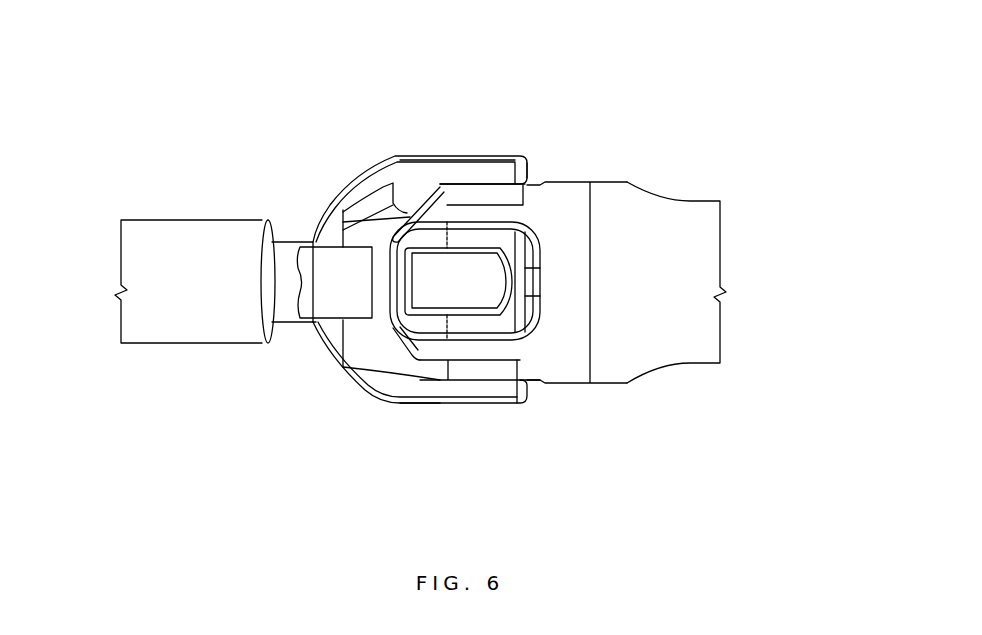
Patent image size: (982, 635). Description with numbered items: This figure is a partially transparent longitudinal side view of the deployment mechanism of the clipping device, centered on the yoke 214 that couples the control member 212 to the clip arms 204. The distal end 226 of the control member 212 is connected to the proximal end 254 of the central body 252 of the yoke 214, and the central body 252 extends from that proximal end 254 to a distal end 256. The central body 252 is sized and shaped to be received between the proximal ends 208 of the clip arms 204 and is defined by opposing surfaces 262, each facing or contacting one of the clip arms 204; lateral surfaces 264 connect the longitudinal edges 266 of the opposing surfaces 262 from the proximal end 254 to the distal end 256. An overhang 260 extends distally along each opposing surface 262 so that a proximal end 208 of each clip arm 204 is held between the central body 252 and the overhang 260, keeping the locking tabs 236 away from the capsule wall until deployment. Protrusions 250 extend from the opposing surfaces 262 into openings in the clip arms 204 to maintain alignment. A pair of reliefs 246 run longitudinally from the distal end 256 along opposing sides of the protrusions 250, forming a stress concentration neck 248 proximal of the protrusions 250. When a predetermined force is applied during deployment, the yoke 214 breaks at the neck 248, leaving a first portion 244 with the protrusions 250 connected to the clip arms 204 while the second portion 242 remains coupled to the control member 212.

The clip arms 204 is at (705, 262).
The proximal ends 208 is at (555, 212).
The control member 212 is at (150, 245).
The yoke 214 is at (407, 190).
The distal end of the control member 226 is at (262, 237).
The locking tabs 236 is at (327, 235).
The second portion 242 is at (353, 383).
The first portion 244 is at (463, 240).
The reliefs 246 is at (440, 208).
The stress concentration neck 248 is at (383, 280).
The protrusions 250 is at (455, 287).
The central body 252 is at (360, 197).
The proximal end 254 is at (318, 334).
The distal end 256 is at (527, 392).
The overhang 260 is at (342, 262).
The opposing surfaces 262 is at (497, 175).
The lateral surfaces 264 is at (437, 405).
The longitudinal edges 266 is at (413, 392).